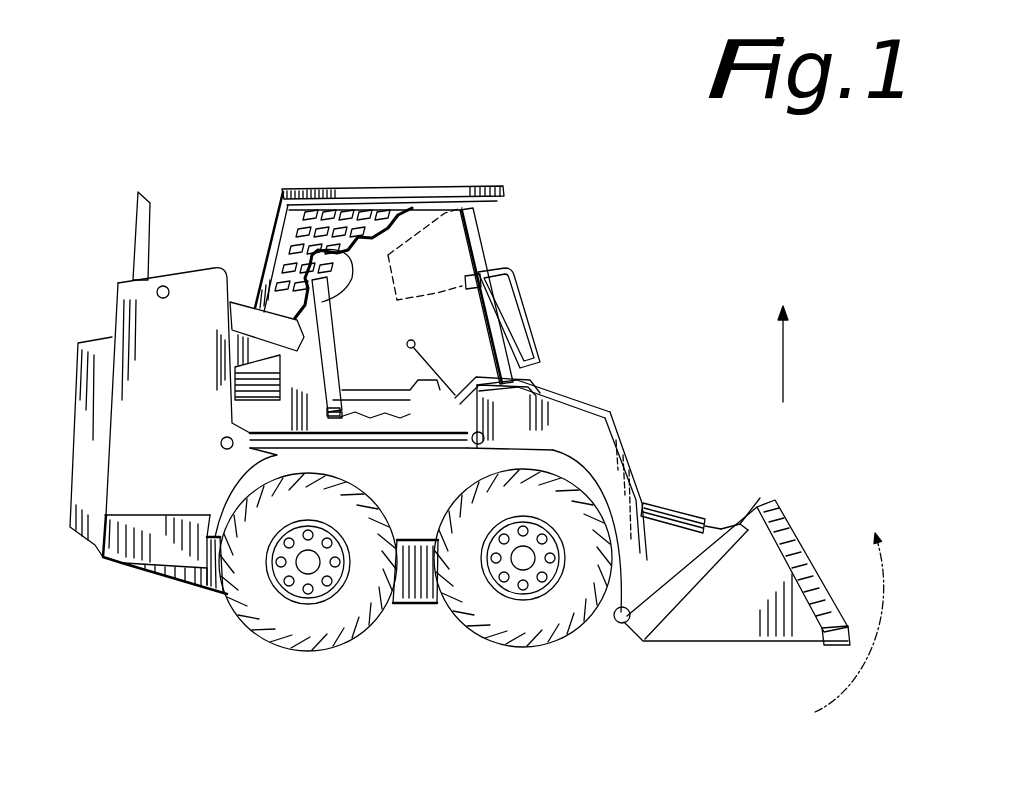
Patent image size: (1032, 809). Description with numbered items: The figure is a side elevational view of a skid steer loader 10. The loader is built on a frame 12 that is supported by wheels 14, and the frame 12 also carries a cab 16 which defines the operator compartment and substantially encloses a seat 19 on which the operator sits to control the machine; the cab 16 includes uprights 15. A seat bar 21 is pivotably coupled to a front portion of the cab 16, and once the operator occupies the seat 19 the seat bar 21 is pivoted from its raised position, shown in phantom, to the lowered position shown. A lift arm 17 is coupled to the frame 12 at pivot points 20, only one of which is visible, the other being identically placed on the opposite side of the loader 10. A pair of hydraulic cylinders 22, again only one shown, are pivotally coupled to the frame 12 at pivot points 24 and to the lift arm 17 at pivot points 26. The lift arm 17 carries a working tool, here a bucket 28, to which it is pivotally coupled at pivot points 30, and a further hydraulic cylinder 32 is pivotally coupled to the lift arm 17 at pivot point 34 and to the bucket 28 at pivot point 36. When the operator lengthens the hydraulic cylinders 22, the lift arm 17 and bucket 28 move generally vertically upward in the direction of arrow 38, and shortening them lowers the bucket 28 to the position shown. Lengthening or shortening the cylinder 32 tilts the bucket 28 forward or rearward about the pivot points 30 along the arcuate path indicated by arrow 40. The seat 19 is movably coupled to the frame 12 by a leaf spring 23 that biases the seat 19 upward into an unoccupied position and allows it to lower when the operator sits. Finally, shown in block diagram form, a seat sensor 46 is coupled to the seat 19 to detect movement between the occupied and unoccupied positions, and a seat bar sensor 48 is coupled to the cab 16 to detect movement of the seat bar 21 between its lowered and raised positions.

The skid steer loader 10 is at (612, 205).
The frame 12 is at (100, 560).
The wheels 14 is at (343, 650).
The uprights 15 is at (480, 216).
The cab 16 is at (445, 188).
The lift arm 17 is at (628, 416).
The seat 19 is at (330, 290).
The pivot points 20 is at (165, 286).
The seat bar 21 is at (400, 300).
The hydraulic cylinders 22 is at (410, 372).
The leaf spring 23 is at (398, 415).
The pivot points 24 is at (220, 445).
The pivot points 26 is at (505, 385).
The bucket 28 is at (797, 548).
The pivot points 30 is at (623, 625).
The hydraulic cylinder 32 is at (688, 507).
The pivot point 34 is at (632, 470).
The pivot point 36 is at (742, 512).
The arrow 38 is at (783, 372).
The arrow 40 is at (857, 672).
The seat sensor 46 is at (333, 412).
The seat bar sensor 48 is at (500, 280).